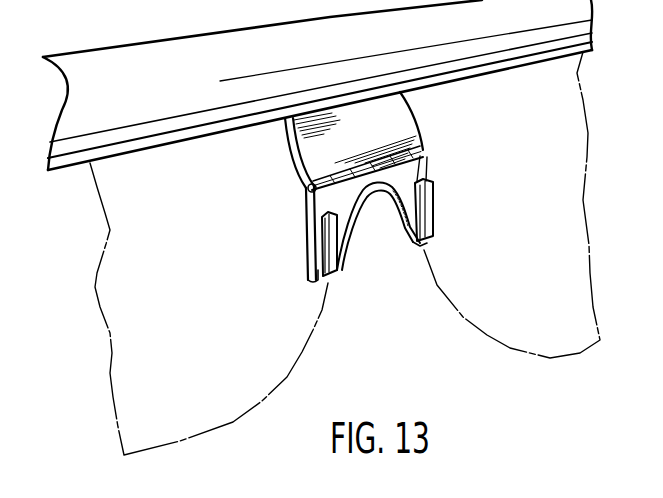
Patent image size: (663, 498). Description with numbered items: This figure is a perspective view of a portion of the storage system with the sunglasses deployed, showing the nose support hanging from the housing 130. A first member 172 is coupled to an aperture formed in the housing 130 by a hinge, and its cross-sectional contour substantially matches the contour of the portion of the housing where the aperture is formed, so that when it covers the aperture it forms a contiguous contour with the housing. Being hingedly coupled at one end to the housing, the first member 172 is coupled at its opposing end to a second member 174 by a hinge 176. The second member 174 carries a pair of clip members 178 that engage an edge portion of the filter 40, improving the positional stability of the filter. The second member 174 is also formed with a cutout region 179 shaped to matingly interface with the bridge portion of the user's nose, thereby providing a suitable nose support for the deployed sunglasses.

The housing 130 is at (154, 94).
The filter 40 is at (133, 228).
The first member 172 is at (397, 125).
The hinge 176 is at (427, 153).
The second member 174 is at (311, 283).
The clip members 178 is at (334, 279).
The cutout region 179 is at (397, 217).